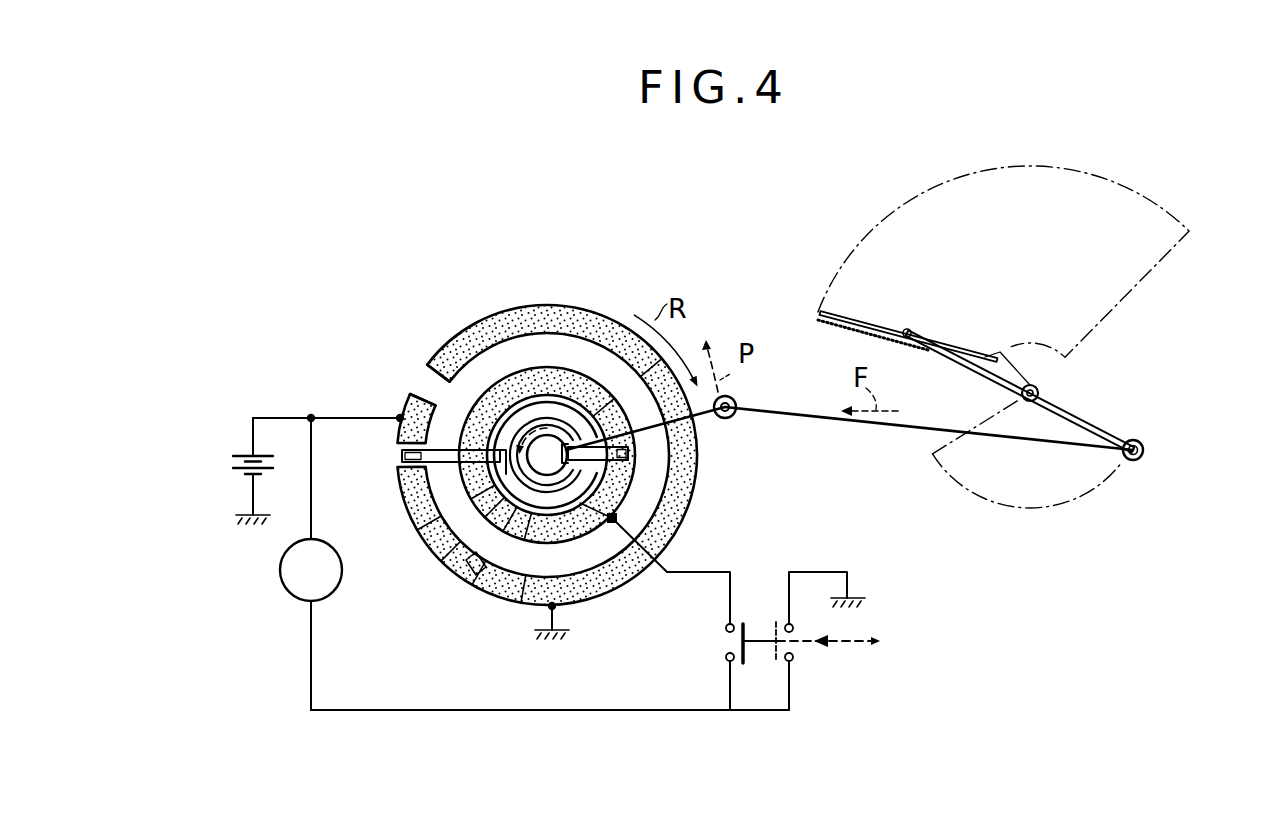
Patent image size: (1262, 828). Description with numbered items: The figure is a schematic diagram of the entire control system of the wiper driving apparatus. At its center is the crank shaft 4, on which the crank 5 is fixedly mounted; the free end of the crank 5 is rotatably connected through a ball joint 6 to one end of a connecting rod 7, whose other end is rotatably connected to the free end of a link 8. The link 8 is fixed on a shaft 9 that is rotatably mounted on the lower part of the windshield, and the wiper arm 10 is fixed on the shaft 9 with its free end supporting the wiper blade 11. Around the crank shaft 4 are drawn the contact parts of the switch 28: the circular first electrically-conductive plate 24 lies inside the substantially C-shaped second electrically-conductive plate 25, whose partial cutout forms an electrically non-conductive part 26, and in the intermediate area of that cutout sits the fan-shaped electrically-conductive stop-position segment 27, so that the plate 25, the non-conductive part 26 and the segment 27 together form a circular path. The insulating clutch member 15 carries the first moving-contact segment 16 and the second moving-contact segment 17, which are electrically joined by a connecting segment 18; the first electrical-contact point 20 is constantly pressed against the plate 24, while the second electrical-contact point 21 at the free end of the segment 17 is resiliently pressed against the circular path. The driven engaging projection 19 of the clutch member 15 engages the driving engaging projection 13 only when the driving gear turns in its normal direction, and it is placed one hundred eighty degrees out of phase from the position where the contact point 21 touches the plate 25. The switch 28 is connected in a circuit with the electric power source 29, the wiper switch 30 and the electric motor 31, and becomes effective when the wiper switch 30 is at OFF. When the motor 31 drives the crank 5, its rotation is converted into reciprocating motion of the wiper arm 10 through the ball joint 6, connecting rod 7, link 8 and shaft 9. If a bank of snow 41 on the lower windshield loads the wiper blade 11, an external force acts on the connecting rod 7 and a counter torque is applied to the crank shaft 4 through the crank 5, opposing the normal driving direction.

The crank shaft 4 is at (545, 545).
The crank 5 is at (708, 420).
The ball joint 6 is at (737, 407).
The connecting rod 7 is at (848, 419).
The link 8 is at (1115, 425).
The shaft 9 is at (1040, 389).
The wiper arm 10 is at (982, 375).
The wiper blade 11 is at (855, 318).
The driving engaging projection 13 is at (572, 437).
The clutch member 15 is at (478, 541).
The first moving-contact segment 16 is at (640, 458).
The second moving-contact segment 17 is at (408, 498).
The connecting segment 18 is at (518, 552).
The driven engaging projection 19 is at (630, 515).
The first electrical-contact point 20 is at (640, 522).
The second electrical-contact point 21 is at (402, 457).
The first electrically-conductive plate 24 is at (546, 363).
The second electrically-conductive plate 25 is at (610, 318).
The electrically non-conductive part 26 is at (430, 390).
The electrically-conductive stop-position segment 27 is at (398, 417).
The switch 28 is at (428, 352).
The electric power source 29 is at (248, 452).
The wiper switch 30 is at (800, 653).
The electric motor 31 is at (342, 578).
The bank of snow 41 is at (828, 327).